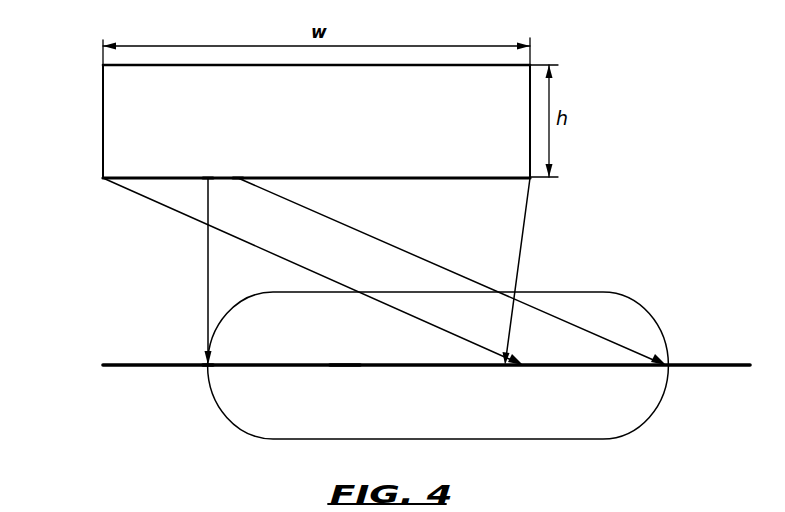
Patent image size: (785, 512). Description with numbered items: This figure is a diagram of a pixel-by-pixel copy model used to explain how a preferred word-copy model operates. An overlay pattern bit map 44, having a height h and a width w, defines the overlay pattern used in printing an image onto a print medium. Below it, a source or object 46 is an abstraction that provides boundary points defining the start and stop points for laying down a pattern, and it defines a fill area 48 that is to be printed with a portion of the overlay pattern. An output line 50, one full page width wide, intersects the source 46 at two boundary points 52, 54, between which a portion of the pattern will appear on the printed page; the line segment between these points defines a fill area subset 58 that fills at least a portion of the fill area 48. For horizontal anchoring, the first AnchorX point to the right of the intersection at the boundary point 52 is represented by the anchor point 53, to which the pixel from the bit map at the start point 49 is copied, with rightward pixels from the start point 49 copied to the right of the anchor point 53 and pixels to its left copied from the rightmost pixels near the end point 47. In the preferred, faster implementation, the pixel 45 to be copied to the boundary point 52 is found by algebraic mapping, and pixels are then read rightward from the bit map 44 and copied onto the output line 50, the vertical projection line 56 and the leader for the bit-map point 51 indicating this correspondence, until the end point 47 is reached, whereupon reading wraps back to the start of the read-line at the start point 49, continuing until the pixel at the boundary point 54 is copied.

The overlay pattern bit map 44 is at (440, 64).
The pixel 45 is at (208, 178).
The source 46 is at (650, 410).
The end point 47 is at (532, 180).
The fill area 48 is at (459, 412).
The start point 49 is at (103, 178).
The output line 50 is at (135, 358).
The reference point on bitmap bottom edge 51 is at (238, 178).
The boundary point 52 is at (208, 368).
The anchor point 53 is at (530, 380).
The boundary point 54 is at (668, 363).
The vertical projection line 56 is at (208, 270).
The fill area subset 58 is at (345, 362).